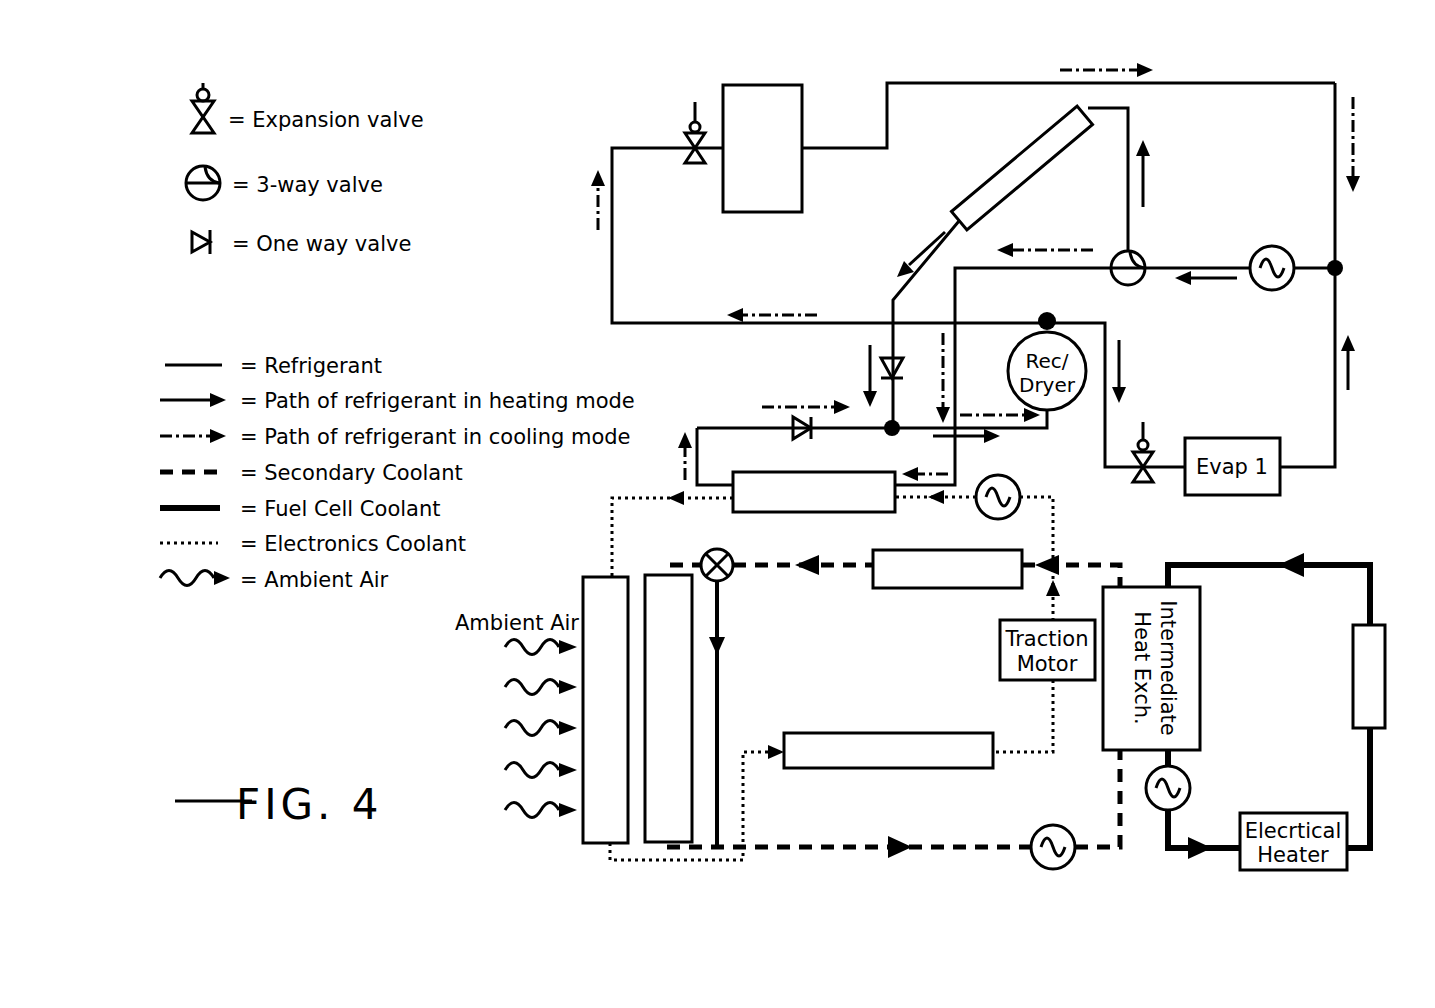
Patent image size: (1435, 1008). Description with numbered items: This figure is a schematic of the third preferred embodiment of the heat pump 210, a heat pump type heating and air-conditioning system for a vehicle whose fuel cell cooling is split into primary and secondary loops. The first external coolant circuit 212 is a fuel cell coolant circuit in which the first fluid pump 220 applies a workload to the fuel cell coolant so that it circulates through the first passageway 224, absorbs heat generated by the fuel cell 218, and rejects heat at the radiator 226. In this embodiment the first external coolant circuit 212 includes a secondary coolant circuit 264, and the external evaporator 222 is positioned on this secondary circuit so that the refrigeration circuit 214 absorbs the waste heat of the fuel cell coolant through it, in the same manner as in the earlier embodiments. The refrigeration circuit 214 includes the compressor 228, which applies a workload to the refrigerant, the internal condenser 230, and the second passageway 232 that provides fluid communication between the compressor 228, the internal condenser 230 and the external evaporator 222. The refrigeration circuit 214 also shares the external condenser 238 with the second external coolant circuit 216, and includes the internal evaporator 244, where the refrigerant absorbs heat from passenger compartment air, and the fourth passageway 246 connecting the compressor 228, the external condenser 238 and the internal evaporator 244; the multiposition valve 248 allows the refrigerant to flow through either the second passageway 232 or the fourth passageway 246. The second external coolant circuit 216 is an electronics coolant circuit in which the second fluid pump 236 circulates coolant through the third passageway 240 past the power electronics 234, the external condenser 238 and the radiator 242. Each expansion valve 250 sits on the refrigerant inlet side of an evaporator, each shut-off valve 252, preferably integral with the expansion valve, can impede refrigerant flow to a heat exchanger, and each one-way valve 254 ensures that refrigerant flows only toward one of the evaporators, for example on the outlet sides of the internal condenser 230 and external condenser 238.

The heat pump 210 is at (1425, 54).
The first external coolant circuit 212 is at (1376, 590).
The refrigeration circuit 214 is at (1338, 92).
The second external coolant circuit 216 is at (612, 862).
The fuel cell 218 is at (1388, 665).
The first fluid pump 220 is at (1188, 780).
The external evaporator 222 is at (912, 589).
The first passageway 224 is at (1372, 800).
The radiator 226 is at (655, 845).
The compressor 228 is at (1270, 291).
The internal condenser 230 is at (1036, 190).
The second passageway 232 is at (1338, 404).
The power electronics 234 is at (832, 769).
The second fluid pump 236 is at (1014, 482).
The external condenser 238 is at (772, 513).
The third passageway 240 is at (610, 518).
The radiator 242 is at (582, 840).
The internal evaporator 244 is at (804, 85).
The fourth passageway 246 is at (914, 83).
The multiposition valve 248 is at (1138, 256).
The expansion valve 250 is at (686, 140).
The shut-off valve 252 is at (698, 110).
The one-way valve 254 is at (896, 364).
The secondary coolant circuit 264 is at (816, 850).